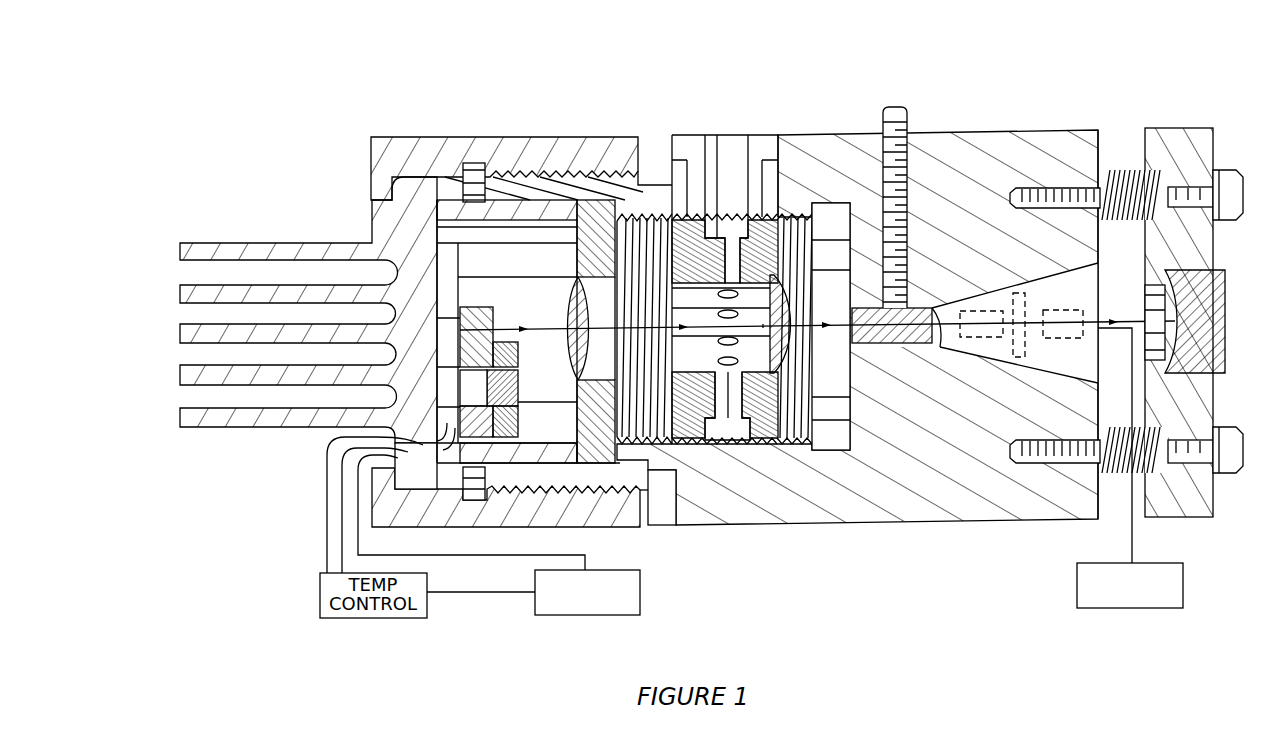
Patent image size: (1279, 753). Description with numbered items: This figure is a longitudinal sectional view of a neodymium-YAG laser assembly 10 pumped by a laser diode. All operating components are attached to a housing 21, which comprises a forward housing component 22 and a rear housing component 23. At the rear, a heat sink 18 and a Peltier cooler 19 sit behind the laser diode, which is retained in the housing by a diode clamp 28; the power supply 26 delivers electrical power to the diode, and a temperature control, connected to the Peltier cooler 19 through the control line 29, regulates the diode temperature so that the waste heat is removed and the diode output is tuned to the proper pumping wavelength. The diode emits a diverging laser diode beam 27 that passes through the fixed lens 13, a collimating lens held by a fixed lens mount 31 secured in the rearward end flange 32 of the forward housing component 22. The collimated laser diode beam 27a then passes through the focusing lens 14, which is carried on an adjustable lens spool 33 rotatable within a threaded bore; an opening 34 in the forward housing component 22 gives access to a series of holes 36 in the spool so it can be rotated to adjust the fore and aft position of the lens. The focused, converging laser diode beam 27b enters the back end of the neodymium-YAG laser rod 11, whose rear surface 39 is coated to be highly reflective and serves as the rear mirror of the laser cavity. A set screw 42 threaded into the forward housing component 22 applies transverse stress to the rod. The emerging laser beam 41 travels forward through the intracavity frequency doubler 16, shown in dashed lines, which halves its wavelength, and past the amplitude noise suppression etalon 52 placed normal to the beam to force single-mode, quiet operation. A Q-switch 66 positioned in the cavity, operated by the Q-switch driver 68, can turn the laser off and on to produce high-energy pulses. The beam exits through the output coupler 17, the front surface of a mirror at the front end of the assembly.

The neodymium-YAG laser assembly 10 is at (644, 72).
The neodymium-YAG laser rod 11 is at (817, 309).
The fixed lens 13 is at (568, 296).
The focusing lens 14 is at (782, 212).
The frequency doubler 16 is at (973, 311).
The output coupler 17 is at (1227, 288).
The heat sink 18 is at (268, 241).
The Peltier cooler 19 is at (458, 263).
The housing 21 is at (643, 500).
The forward housing component 22 is at (997, 130).
The rear housing component 23 is at (500, 137).
The power supply 26 is at (641, 582).
The laser diode beam 27 is at (566, 332).
The collimated laser diode beam 27a is at (722, 342).
The focused, converging laser diode beam 27b is at (838, 332).
The diode clamp 28 is at (518, 398).
The control line 29 is at (427, 582).
The fixed lens mount 31 is at (518, 200).
The rearward end flange 32 is at (590, 283).
The adjustable lens spool 33 is at (743, 216).
The opening 34 is at (720, 250).
The holes 36 is at (720, 296).
The rear surface 39 is at (851, 317).
The emerging laser beam 41 is at (940, 347).
The set screw 42 is at (895, 105).
The amplitude noise suppression etalon 52 is at (1018, 293).
The Q-switch 66 is at (1058, 310).
The Q-switch driver 68 is at (1183, 575).